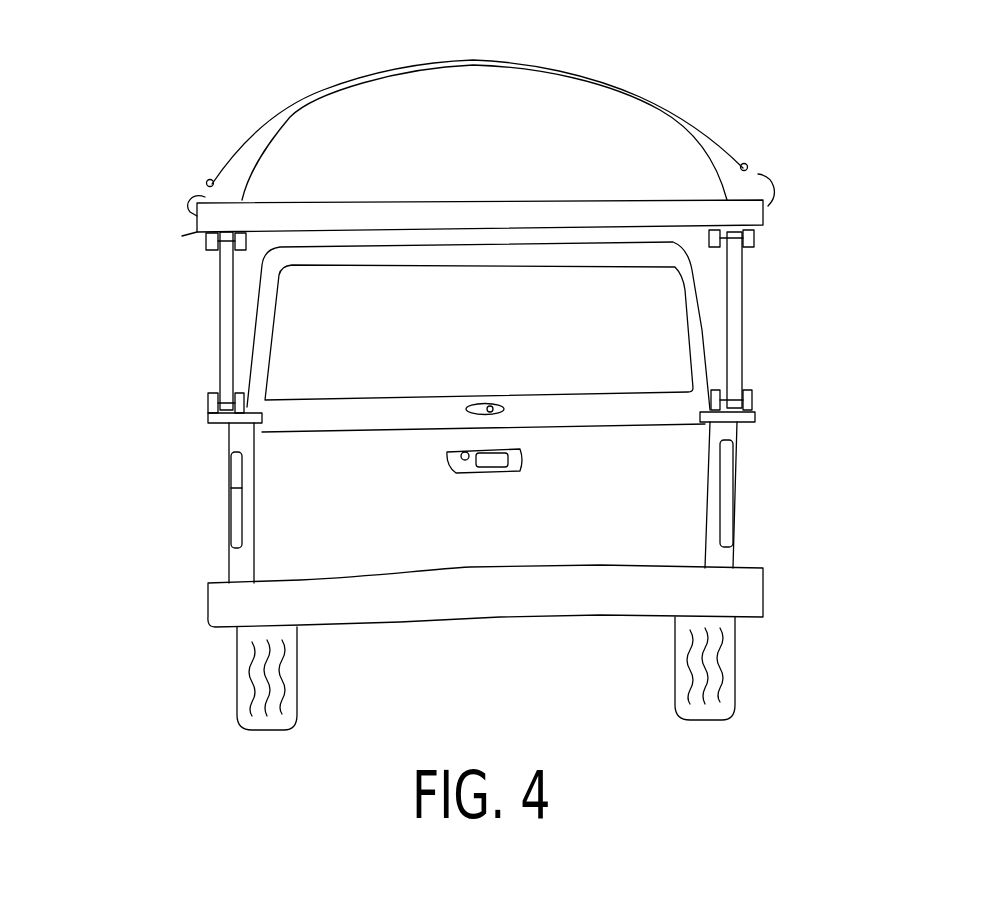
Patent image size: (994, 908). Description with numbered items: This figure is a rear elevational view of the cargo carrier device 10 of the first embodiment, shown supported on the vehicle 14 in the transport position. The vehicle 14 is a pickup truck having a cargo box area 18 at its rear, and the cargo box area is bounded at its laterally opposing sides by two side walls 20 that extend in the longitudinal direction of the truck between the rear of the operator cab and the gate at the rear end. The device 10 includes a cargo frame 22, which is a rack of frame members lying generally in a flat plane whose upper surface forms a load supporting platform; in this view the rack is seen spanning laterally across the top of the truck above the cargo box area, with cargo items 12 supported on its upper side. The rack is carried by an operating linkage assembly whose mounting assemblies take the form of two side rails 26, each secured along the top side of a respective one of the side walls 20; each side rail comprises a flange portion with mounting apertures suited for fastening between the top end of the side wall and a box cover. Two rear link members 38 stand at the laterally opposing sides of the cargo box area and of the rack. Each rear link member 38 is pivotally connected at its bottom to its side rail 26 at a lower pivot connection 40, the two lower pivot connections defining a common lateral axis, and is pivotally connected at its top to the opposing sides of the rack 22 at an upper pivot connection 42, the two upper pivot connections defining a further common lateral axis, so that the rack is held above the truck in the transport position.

The cargo carrier device 10 is at (140, 365).
The cargo items 12 is at (565, 110).
The vehicle 14 is at (792, 585).
The cargo box area 18 is at (345, 525).
The side walls 20 is at (243, 508).
The cargo frame 22 is at (196, 229).
The side rails 26 is at (217, 423).
The rear link members 38 is at (223, 316).
The lower pivot connections 40 is at (210, 400).
The upper pivot connections 42 is at (207, 247).